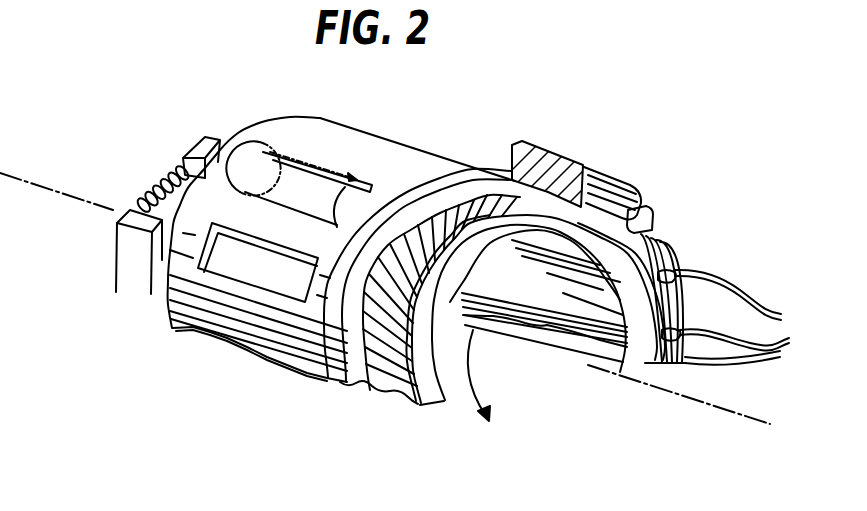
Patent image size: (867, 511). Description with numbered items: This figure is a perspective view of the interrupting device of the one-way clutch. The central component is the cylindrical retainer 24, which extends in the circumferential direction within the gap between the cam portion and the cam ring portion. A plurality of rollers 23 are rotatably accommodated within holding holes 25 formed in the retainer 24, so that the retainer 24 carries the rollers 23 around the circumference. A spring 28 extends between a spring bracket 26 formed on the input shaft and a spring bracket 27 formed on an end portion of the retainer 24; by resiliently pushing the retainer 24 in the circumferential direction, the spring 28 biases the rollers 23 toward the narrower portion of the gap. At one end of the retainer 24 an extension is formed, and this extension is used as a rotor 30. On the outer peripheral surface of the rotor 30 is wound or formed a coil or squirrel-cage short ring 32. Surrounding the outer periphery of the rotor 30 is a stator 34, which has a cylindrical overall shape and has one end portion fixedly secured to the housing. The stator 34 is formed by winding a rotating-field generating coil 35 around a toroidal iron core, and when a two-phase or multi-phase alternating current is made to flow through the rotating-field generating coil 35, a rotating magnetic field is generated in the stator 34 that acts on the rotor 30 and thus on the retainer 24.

The rollers 23 is at (270, 152).
The retainer 24 is at (223, 323).
The holding holes 25 is at (276, 289).
The spring bracket 26 is at (136, 268).
The spring bracket 27 is at (192, 150).
The spring 28 is at (143, 190).
The rotor 30 is at (441, 406).
The squirrel-cage short ring 32 is at (387, 382).
The stator 34 is at (578, 165).
The rotating-field generating coil 35 is at (660, 237).